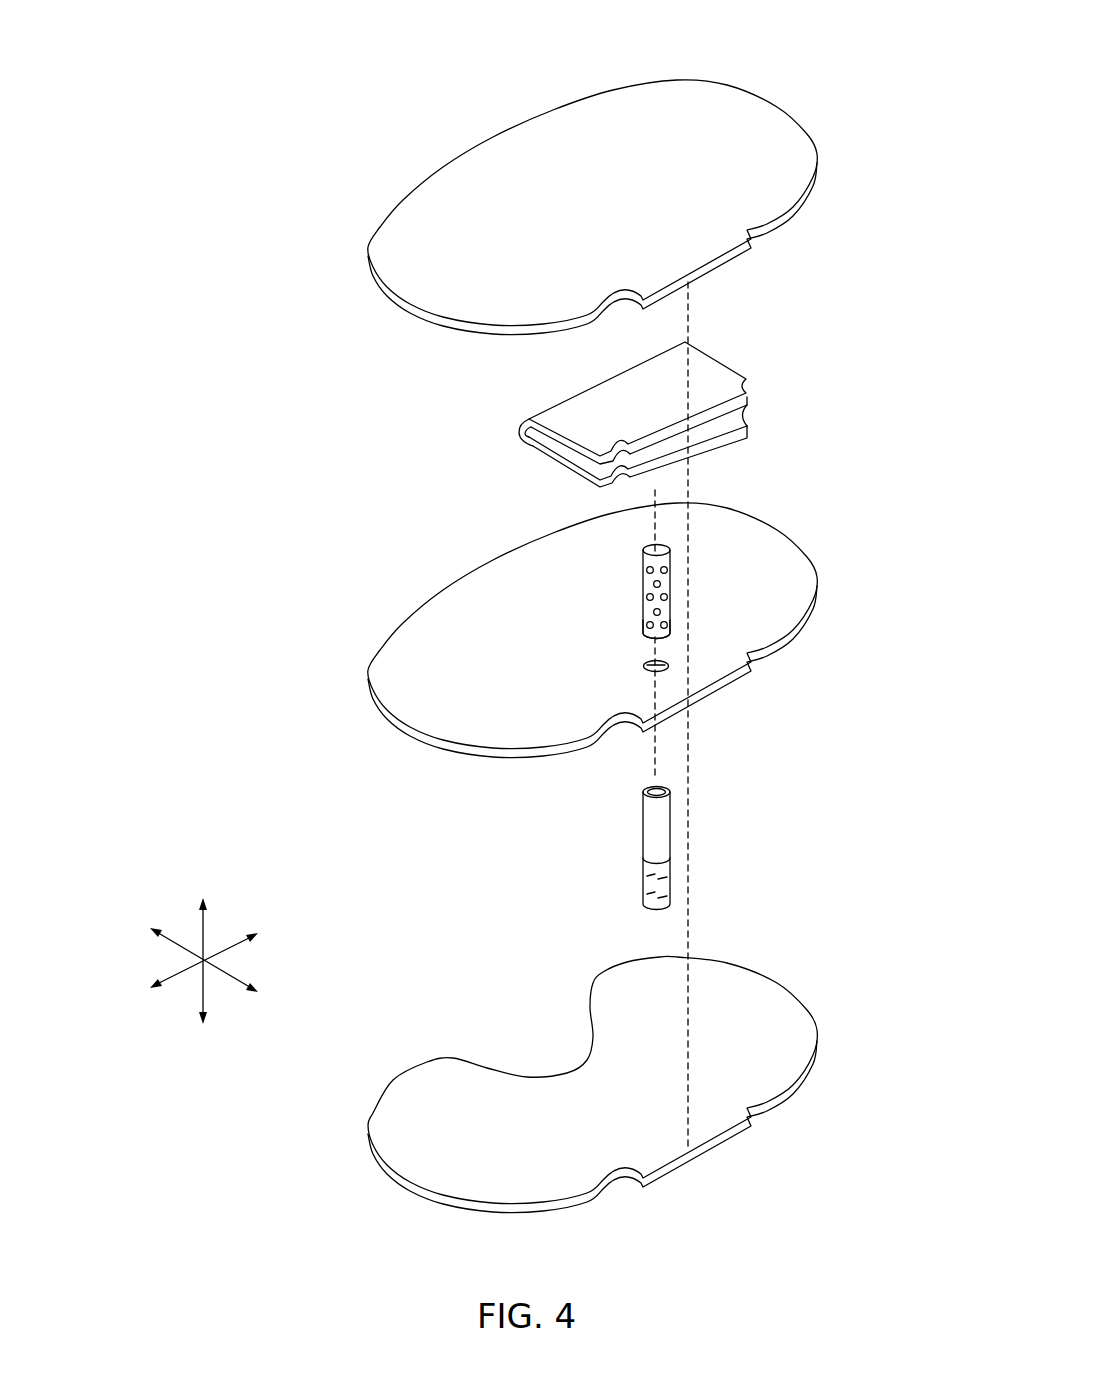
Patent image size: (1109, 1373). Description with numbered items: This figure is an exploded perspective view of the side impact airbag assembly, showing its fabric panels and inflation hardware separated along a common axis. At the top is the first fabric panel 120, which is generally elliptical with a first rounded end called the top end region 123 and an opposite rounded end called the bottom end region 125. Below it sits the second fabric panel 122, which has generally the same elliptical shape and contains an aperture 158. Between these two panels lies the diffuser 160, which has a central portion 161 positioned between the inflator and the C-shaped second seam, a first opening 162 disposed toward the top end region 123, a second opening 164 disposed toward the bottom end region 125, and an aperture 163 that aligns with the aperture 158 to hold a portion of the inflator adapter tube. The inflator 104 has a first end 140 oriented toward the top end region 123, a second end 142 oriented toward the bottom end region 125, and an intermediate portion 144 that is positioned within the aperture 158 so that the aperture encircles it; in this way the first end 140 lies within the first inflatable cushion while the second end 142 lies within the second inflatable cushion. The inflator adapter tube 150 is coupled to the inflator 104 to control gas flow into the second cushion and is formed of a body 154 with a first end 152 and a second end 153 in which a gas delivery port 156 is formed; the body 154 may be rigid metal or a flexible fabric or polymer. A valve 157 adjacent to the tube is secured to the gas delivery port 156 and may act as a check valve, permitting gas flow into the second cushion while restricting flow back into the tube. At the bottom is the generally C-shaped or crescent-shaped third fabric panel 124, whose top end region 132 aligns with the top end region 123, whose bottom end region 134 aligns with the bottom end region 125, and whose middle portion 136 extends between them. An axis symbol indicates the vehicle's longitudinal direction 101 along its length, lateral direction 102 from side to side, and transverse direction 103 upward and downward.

The first fabric panel 120 is at (800, 58).
The top end region 123 is at (790, 110).
The bottom end region 125 is at (392, 275).
The diffuser 160 is at (675, 392).
The central portion 161 is at (615, 388).
The first opening 162 is at (742, 427).
The aperture 163 is at (690, 450).
The second opening 164 is at (565, 452).
The second fabric panel 122 is at (808, 509).
The inflator 104 is at (688, 576).
The first end 140 is at (611, 596).
The intermediate portion 144 is at (642, 607).
The second end 142 is at (643, 628).
The aperture 158 is at (645, 669).
The inflator adapter tube 150 is at (675, 833).
The first end 152 is at (650, 812).
The second end 153 is at (648, 862).
The body 154 is at (672, 841).
The gas delivery port 156 is at (670, 860).
The valve 157 is at (648, 892).
The third fabric panel 124 is at (609, 1062).
The top end region 132 is at (832, 994).
The bottom end region 134 is at (405, 1157).
The middle portion 136 is at (550, 1178).
The longitudinal direction 101 is at (237, 982).
The lateral direction 102 is at (206, 988).
The transverse direction 103 is at (230, 940).